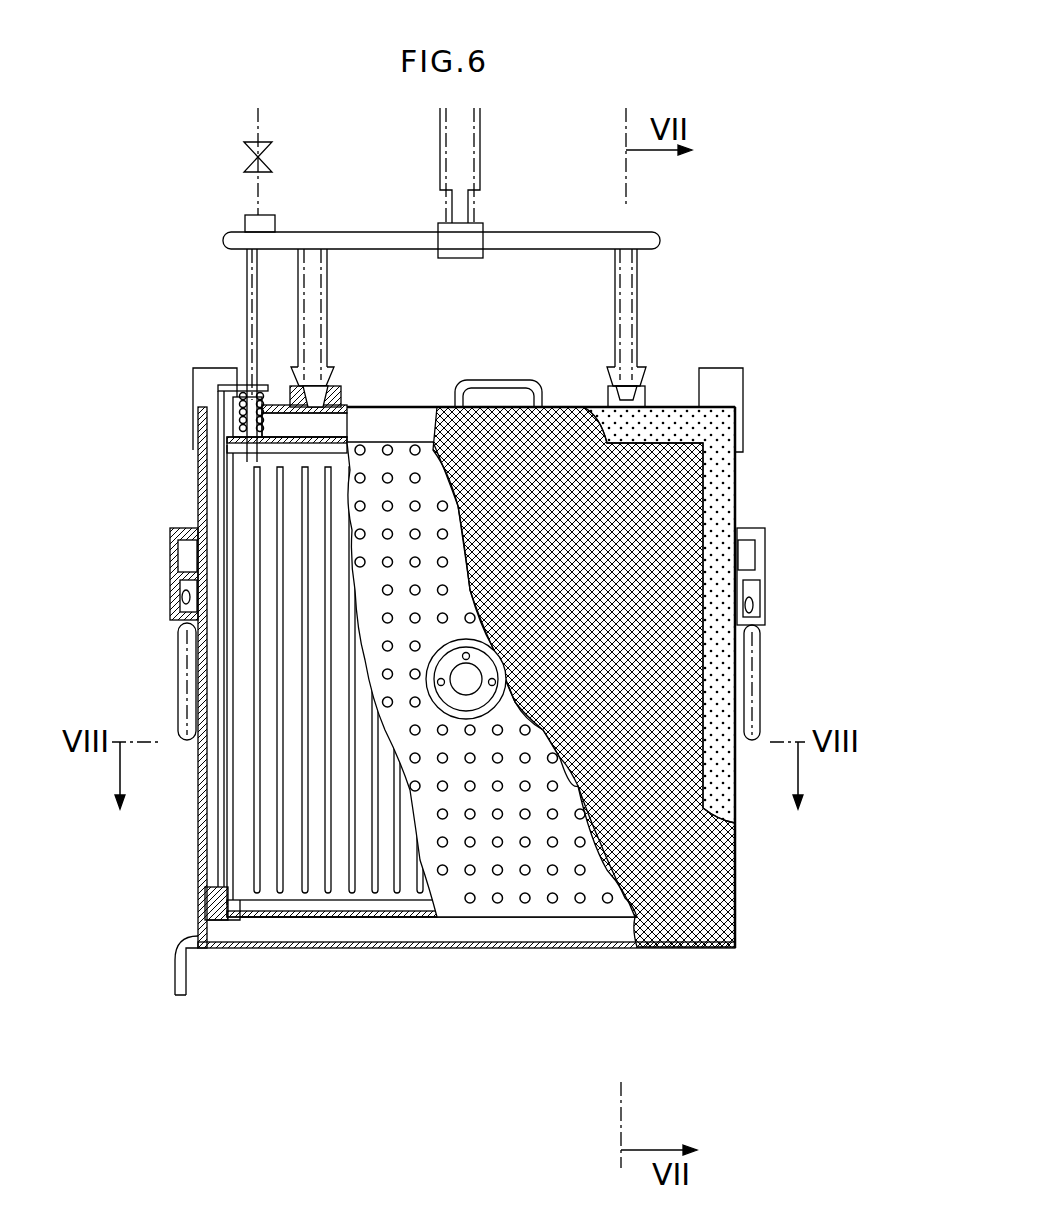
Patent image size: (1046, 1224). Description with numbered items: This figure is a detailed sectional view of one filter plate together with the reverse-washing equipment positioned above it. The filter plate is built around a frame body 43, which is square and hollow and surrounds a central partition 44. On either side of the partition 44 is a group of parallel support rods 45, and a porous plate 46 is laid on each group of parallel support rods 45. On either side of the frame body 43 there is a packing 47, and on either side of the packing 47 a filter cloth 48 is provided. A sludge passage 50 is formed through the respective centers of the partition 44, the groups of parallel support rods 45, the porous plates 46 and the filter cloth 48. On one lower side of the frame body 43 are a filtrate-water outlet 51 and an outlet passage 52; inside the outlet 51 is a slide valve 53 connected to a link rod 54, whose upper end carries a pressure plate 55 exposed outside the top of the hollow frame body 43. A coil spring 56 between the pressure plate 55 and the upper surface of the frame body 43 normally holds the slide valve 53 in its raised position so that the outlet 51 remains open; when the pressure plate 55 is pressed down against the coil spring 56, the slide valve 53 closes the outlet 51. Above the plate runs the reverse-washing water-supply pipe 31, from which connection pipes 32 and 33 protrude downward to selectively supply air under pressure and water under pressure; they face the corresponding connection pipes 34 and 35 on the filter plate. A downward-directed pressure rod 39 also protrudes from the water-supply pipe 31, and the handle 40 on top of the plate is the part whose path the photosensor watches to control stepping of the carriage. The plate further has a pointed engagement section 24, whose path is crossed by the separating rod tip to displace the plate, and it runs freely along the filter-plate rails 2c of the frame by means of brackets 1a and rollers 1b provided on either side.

The bracket 1a is at (165, 557).
The roller 1b is at (170, 607).
The filter-plate rail 2c is at (178, 680).
The pointed engagement section 24 is at (193, 373).
The reverse-washing water-supply pipe 31 is at (323, 232).
The connection pipe 32 is at (300, 276).
The connection pipe 33 is at (637, 310).
The connection pipe 34 is at (338, 388).
The connection pipe 35 is at (648, 392).
The pressure rod 39 is at (245, 307).
The handle 40 is at (530, 378).
The frame body 43 is at (288, 405).
The partition 44 is at (347, 440).
The parallel support rods 45 is at (297, 893).
The porous plate 46 is at (360, 505).
The packing 47 is at (730, 468).
The filter cloth 48 is at (703, 482).
The sludge passage 50 is at (478, 690).
The filtrate-water outlet 51 is at (213, 925).
The outlet passage 52 is at (173, 973).
The slide valve 53 is at (210, 908).
The link rod 54 is at (217, 747).
The pressure plate 55 is at (243, 385).
The coil spring 56 is at (240, 422).